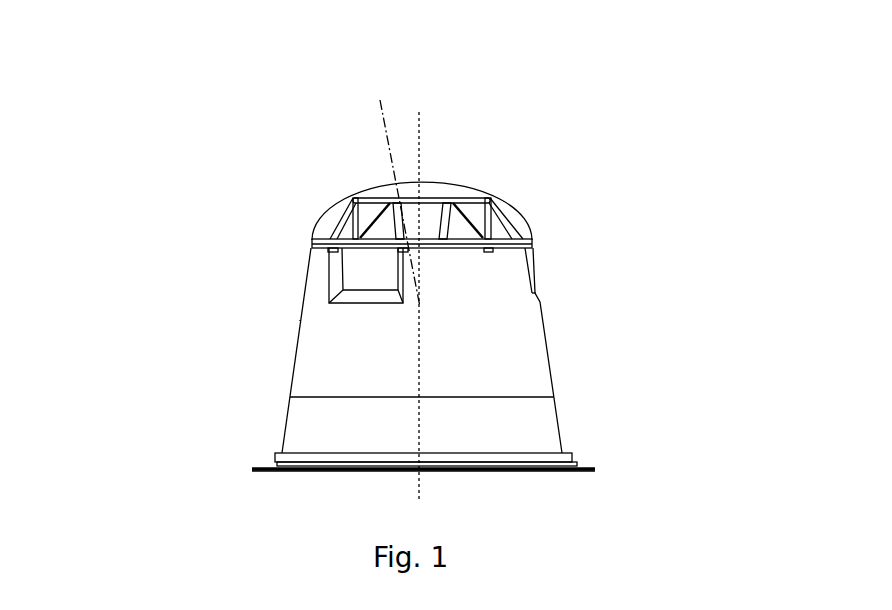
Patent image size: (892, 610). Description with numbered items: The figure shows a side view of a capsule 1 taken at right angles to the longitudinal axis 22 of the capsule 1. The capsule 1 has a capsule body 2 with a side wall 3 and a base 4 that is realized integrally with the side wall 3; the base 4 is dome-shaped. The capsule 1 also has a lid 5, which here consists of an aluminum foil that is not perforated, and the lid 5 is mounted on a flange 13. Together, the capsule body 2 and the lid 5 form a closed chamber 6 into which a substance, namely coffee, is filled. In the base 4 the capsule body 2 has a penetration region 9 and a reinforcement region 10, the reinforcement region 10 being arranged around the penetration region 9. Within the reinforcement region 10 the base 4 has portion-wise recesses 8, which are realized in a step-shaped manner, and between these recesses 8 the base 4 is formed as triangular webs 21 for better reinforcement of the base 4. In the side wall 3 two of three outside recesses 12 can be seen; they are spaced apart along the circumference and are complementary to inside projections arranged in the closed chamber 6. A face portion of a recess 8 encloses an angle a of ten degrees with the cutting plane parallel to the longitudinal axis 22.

The capsule 1 is at (419, 80).
The angle a is at (420, 132).
The capsule body 2 is at (252, 398).
The side wall 3 is at (545, 330).
The base 4 is at (541, 240).
The lid 5 is at (525, 470).
The closed chamber 6 is at (403, 372).
The portion-wise recesses 8 is at (352, 197).
The penetration region 9 is at (410, 180).
The reinforcement region 10 is at (330, 222).
The outside recesses 12 is at (368, 274).
The flange 13 is at (578, 467).
The triangular webs 21 is at (455, 221).
The longitudinal axis 22 is at (419, 482).